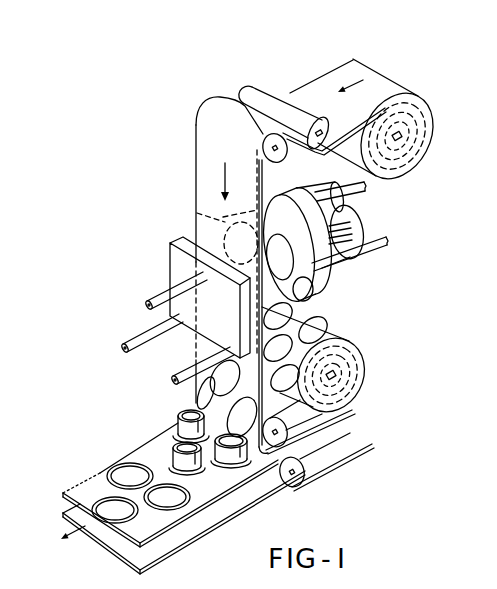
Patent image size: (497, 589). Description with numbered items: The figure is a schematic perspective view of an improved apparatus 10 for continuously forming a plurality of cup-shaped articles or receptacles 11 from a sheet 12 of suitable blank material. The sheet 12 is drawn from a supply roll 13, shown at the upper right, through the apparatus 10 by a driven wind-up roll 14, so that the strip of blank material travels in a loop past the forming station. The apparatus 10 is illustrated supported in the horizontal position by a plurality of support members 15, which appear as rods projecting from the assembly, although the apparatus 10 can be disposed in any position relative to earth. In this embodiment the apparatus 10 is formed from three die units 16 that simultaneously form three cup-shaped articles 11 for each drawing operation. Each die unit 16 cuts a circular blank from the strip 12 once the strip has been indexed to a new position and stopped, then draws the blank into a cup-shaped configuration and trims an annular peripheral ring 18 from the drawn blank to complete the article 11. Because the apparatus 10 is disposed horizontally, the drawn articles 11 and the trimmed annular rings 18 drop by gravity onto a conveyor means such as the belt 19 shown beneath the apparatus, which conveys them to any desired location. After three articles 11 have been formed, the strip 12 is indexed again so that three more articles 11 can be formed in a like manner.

The apparatus 10 is at (461, 154).
The cup-shaped receptacles 11 is at (175, 446).
The sheet of blank material 12 is at (196, 153).
The supply roll 13 is at (424, 115).
The driven wind-up roll 14 is at (355, 358).
The support members 15 is at (145, 330).
The die units 16 is at (197, 212).
The annular peripheral ring 18 is at (109, 496).
The belt 19 is at (208, 498).